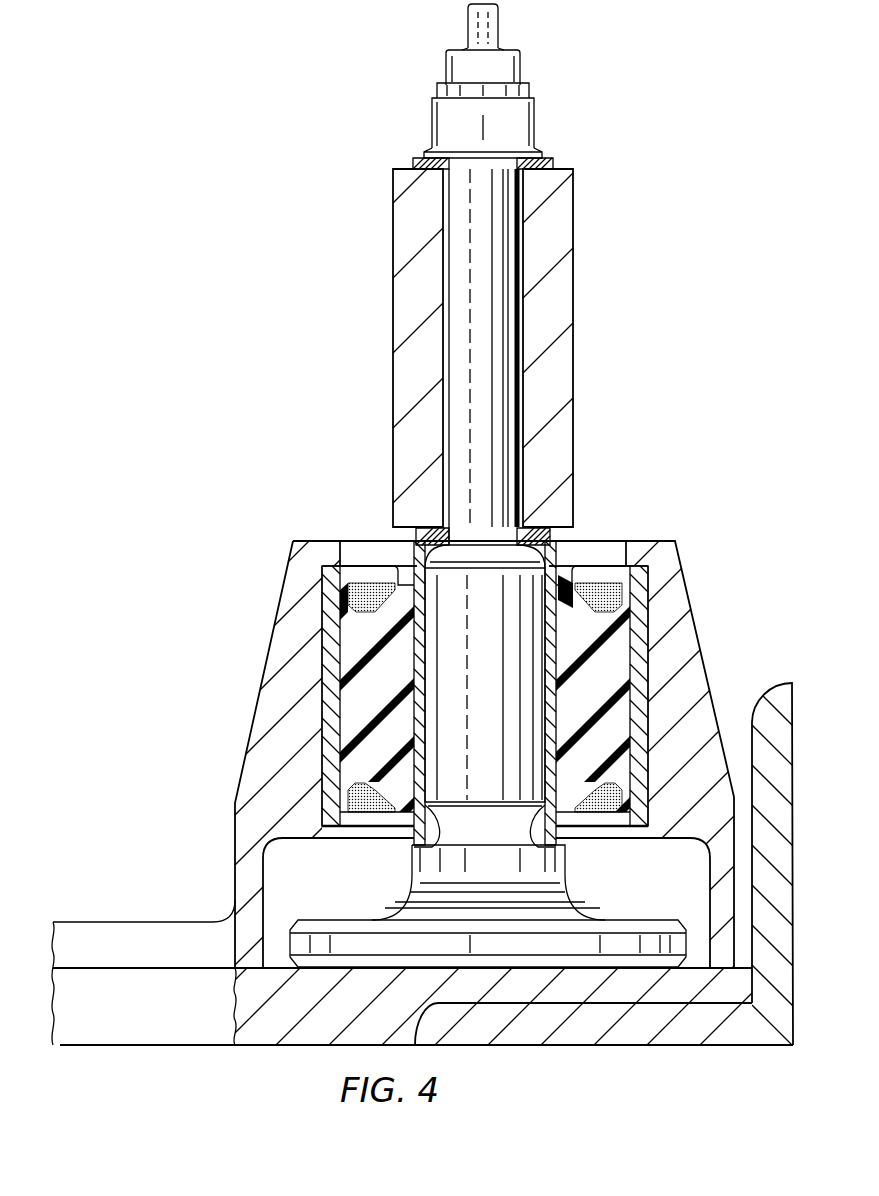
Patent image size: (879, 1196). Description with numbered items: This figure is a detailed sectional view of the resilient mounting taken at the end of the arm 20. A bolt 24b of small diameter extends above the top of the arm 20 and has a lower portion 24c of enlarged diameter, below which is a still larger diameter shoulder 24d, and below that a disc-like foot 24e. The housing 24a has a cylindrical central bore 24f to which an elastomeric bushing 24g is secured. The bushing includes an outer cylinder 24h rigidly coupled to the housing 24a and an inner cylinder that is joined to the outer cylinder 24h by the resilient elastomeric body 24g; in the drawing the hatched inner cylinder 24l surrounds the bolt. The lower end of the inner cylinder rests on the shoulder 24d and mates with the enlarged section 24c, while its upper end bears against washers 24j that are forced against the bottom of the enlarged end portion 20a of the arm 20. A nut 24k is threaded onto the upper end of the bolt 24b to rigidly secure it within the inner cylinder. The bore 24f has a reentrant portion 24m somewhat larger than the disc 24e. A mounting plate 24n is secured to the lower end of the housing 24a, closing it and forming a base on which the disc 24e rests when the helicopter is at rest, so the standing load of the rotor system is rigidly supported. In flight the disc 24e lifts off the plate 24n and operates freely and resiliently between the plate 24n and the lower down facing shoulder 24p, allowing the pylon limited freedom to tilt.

The arm 20 is at (540, 232).
The enlarged end portion 20a is at (557, 386).
The housing 24a is at (277, 690).
The bolt 24b is at (463, 64).
The lower portion 24c is at (505, 712).
The shoulder 24d is at (518, 845).
The disc-like foot 24e is at (615, 940).
The central bore 24f is at (343, 556).
The elastomeric bushing 24g is at (485, 693).
The outer cylinder 24h is at (322, 630).
The washers 24j is at (537, 525).
The nut 24k is at (497, 128).
The inner sleeve 24l is at (433, 628).
The reentrant portion 24m is at (270, 890).
The mounting plate 24n is at (320, 1030).
The lower down facing shoulder 24p is at (678, 852).